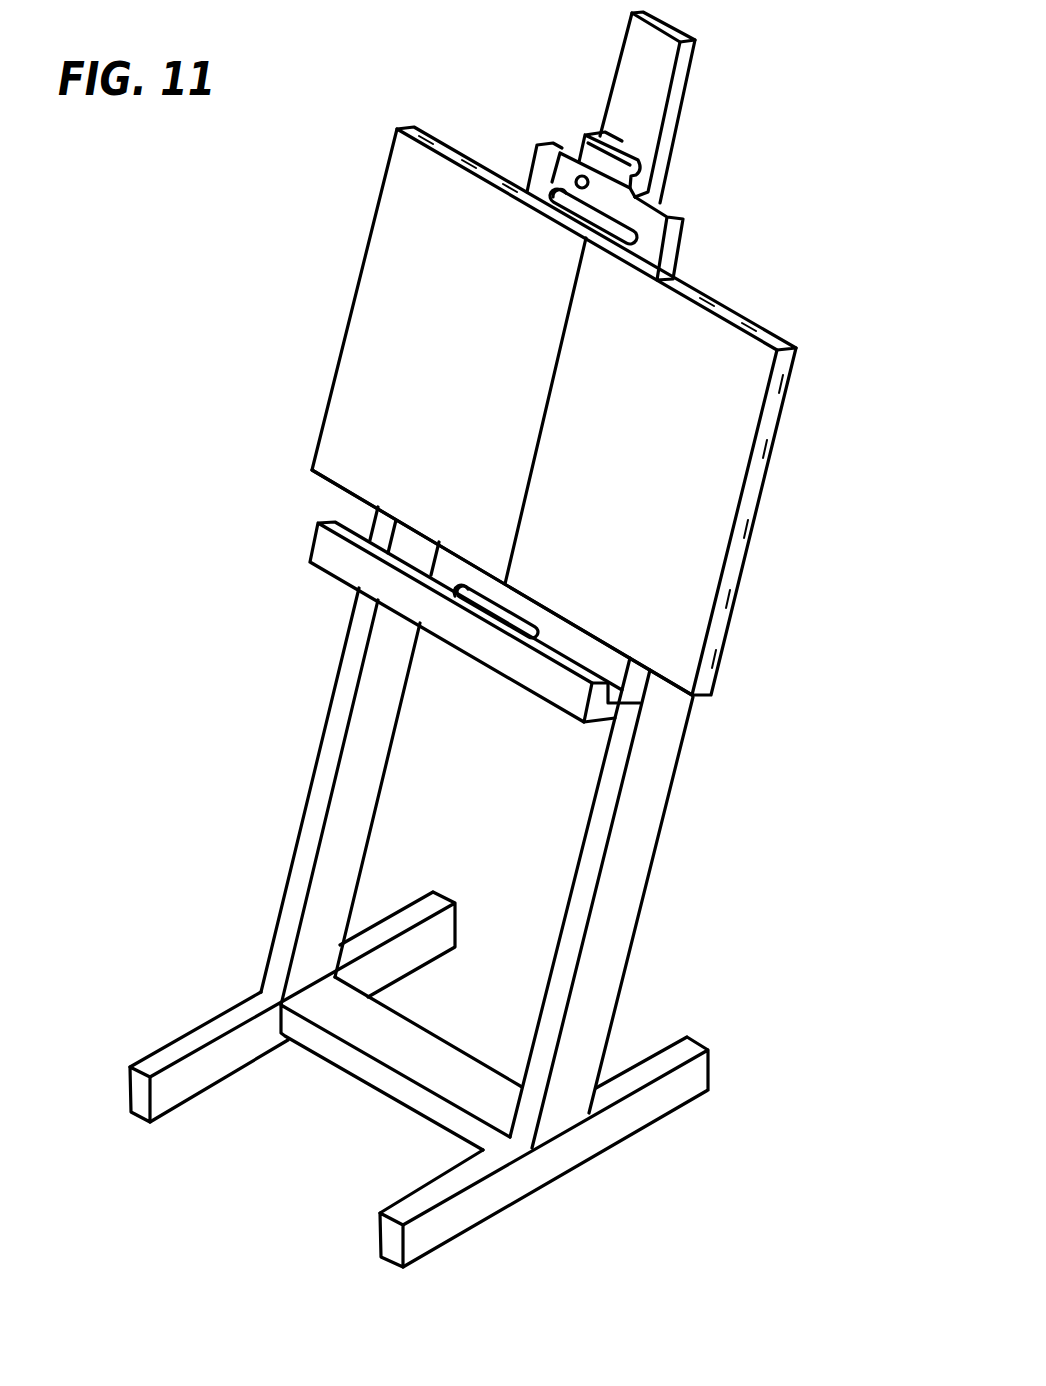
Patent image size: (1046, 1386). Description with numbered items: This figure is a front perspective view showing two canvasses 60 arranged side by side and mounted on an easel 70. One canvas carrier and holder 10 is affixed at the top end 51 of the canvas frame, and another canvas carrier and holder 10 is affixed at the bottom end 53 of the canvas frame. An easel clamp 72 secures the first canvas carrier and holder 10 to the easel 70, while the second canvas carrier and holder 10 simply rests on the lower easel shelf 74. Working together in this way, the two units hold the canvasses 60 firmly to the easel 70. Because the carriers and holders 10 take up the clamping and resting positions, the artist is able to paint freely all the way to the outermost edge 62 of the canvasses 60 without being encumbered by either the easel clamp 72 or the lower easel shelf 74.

The canvas carrier and holder 10 is at (648, 224).
The top end of the canvas frame 51 is at (452, 146).
The bottom end of the canvas frame 53 is at (325, 485).
The canvas 60 is at (668, 455).
The outermost edge of the canvas 62 is at (637, 273).
The easel 70 is at (682, 77).
The easel clamp 72 is at (600, 133).
The lower easel shelf 74 is at (607, 712).